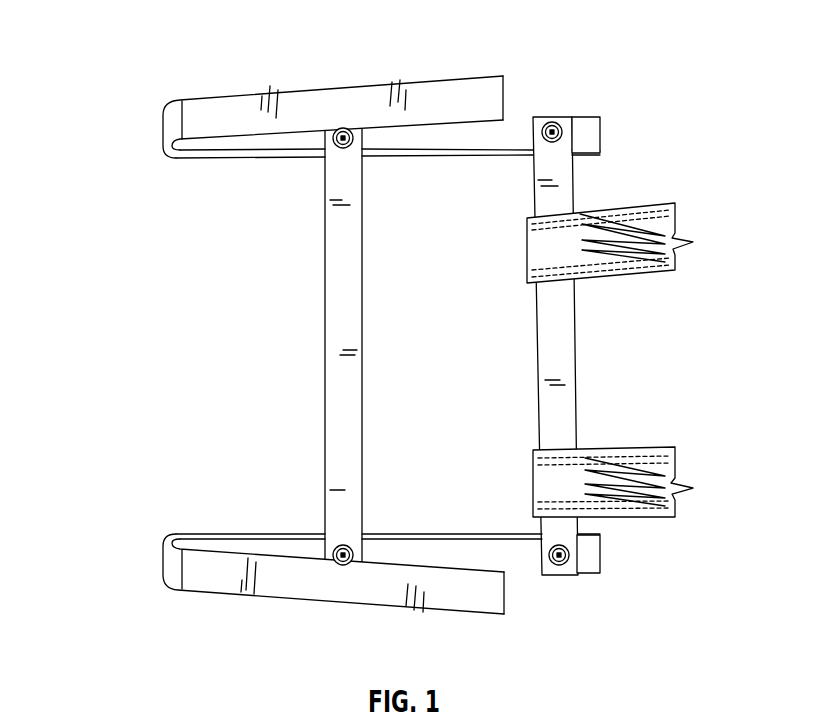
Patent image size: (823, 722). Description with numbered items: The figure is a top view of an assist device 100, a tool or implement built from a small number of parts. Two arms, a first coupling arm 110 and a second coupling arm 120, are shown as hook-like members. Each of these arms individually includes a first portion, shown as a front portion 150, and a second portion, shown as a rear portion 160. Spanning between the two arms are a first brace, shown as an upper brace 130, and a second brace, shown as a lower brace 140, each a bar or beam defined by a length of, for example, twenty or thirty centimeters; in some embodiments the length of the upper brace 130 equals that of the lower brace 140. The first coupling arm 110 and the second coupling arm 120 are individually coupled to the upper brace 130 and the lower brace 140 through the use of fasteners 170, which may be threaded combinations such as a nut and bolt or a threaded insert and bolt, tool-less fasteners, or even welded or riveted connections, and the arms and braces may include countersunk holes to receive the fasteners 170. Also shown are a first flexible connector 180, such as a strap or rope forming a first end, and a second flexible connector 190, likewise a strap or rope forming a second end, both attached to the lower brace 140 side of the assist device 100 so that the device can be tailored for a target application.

The assist device 100 is at (114, 64).
The first coupling arm 110 is at (245, 86).
The second coupling arm 120 is at (334, 612).
The upper brace 130 is at (325, 300).
The lower brace 140 is at (577, 343).
The front portion 150 is at (484, 74).
The rear portion 160 is at (601, 138).
The fasteners 170 is at (336, 140).
The first flexible connector 180 is at (618, 450).
The second flexible connector 190 is at (620, 212).